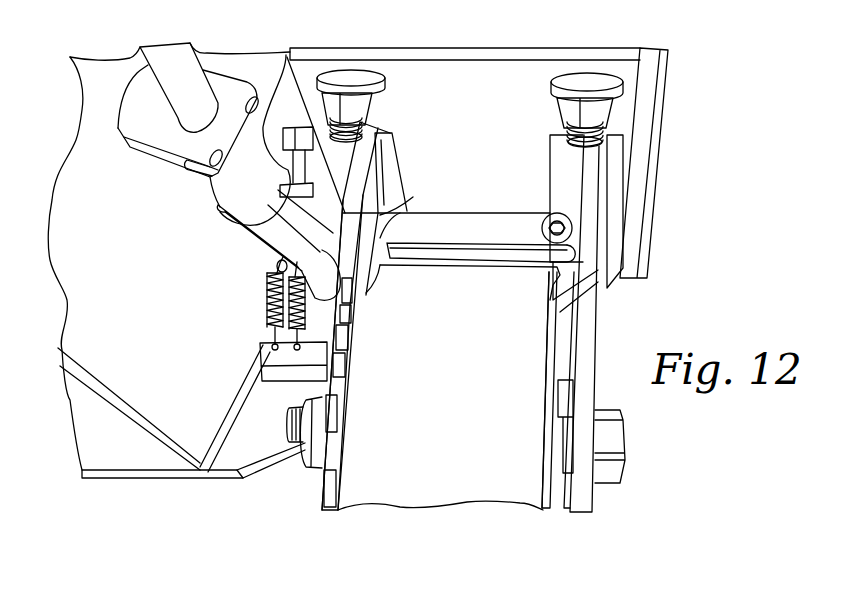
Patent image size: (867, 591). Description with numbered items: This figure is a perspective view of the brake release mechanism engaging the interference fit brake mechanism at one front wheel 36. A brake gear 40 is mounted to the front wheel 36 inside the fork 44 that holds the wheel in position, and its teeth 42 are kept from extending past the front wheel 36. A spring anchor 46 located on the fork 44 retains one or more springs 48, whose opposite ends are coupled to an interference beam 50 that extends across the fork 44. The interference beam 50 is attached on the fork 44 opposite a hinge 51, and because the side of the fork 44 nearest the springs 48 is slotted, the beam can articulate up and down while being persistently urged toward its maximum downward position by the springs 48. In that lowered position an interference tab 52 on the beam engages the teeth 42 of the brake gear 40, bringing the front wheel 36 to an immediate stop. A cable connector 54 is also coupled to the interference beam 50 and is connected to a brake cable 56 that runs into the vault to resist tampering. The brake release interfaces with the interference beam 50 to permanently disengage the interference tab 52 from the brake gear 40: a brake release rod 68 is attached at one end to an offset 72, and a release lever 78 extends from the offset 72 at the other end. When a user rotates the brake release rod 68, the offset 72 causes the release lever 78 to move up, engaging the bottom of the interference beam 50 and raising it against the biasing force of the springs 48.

The front wheel 36 is at (463, 429).
The brake gear 40 is at (340, 380).
The teeth 42 is at (322, 490).
The fork 44 is at (588, 358).
The spring anchor 46 is at (273, 367).
The springs 48 is at (263, 288).
The interference beam 50 is at (483, 232).
The hinge 51 is at (536, 195).
The interference tab 52 is at (388, 240).
The cable connector 54 is at (403, 210).
The brake cable 56 is at (286, 58).
The brake release rod 68 is at (178, 72).
The offset 72 is at (220, 223).
The release lever 78 is at (160, 110).